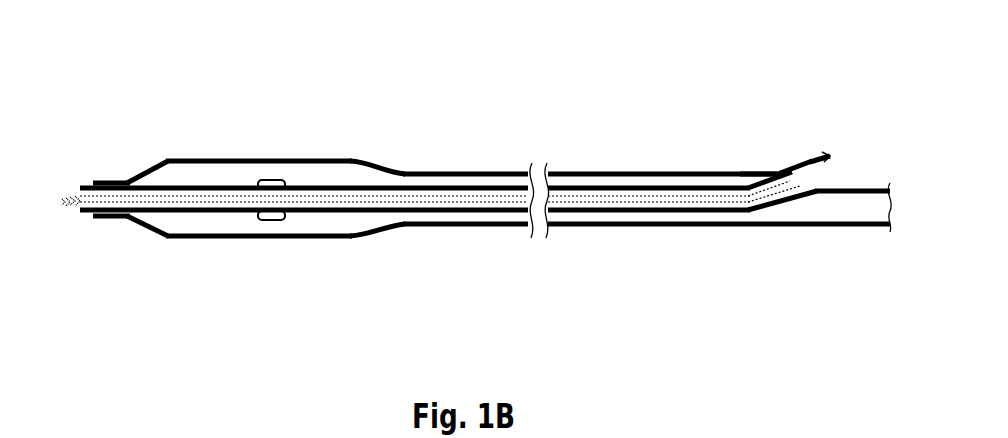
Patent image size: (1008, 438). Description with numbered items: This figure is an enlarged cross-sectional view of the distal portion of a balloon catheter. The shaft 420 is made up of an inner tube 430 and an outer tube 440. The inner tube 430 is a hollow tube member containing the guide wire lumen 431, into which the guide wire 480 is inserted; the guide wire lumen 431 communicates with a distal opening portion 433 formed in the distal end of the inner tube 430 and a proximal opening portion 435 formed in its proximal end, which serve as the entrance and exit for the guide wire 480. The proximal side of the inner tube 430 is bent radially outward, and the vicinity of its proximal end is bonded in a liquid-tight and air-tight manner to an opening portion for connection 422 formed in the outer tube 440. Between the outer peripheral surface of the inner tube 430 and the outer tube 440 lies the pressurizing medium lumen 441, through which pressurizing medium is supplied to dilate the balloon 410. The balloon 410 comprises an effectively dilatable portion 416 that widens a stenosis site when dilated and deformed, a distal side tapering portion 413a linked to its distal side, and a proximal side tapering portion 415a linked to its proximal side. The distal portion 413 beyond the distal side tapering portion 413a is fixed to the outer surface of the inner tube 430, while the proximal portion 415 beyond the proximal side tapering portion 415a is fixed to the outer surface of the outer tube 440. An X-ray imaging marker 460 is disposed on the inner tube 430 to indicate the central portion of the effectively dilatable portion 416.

The balloon 410 is at (340, 136).
The distal portion 413 is at (103, 181).
The distal side tapering portion 413a is at (153, 167).
The proximal portion 415 is at (426, 170).
The proximal side tapering portion 415a is at (388, 160).
The effectively dilatable portion 416 is at (273, 158).
The shaft 420 is at (770, 303).
The opening portion for connection 422 is at (767, 173).
The inner tube 430 is at (688, 205).
The guide wire lumen 431 is at (597, 222).
The distal opening portion 433 is at (80, 207).
The proximal opening portion 435 is at (824, 172).
The outer tube 440 is at (748, 216).
The pressurizing medium lumen 441 is at (815, 217).
The X-ray imaging marker 460 is at (270, 222).
The guide wire 480 is at (813, 163).